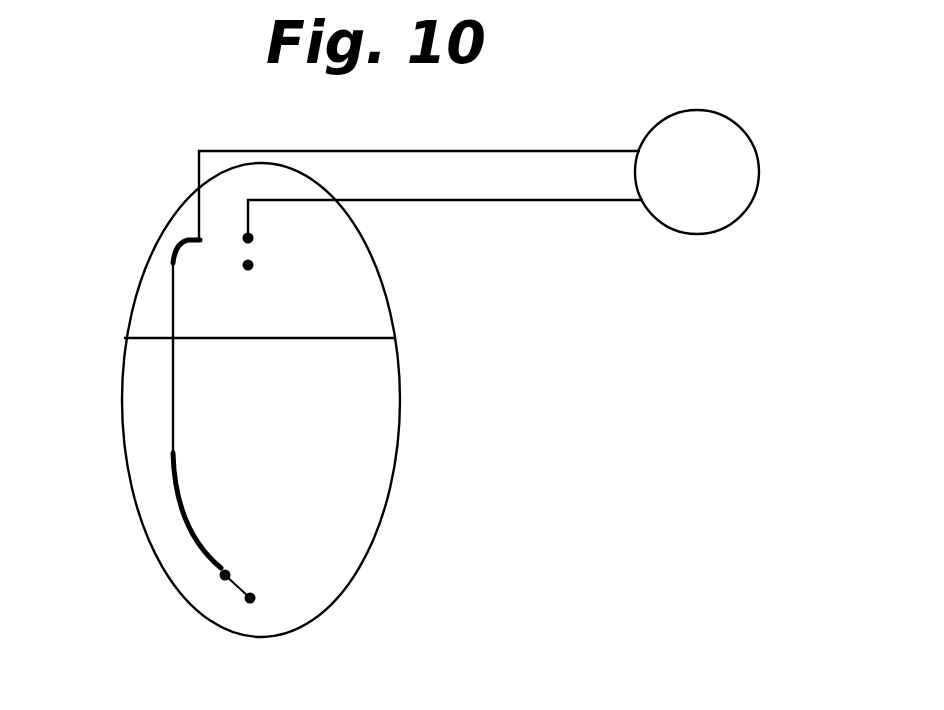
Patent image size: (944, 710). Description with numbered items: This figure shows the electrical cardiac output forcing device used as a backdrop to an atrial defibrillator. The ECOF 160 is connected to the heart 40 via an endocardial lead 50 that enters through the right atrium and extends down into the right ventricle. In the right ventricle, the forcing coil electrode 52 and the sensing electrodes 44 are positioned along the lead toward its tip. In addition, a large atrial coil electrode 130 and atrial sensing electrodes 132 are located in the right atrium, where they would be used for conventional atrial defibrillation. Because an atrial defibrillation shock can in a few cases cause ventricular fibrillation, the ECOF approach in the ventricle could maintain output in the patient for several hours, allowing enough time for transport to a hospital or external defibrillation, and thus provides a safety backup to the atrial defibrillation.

The heart 40 is at (399, 424).
The ECOF 160 is at (699, 235).
The endocardial lead 50 is at (523, 150).
The atrial coil electrode 130 is at (184, 238).
The forcing coil electrode 52 is at (183, 513).
The sensing electrodes 44 is at (237, 589).
The atrial sensing electrodes 132 is at (253, 264).